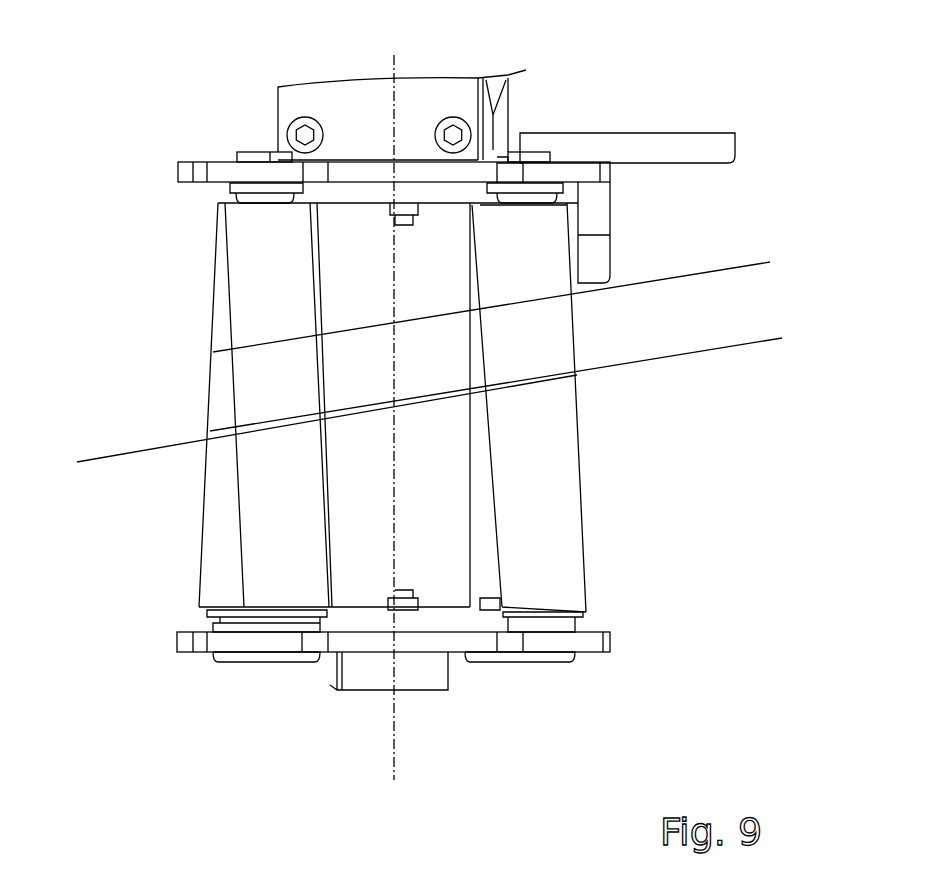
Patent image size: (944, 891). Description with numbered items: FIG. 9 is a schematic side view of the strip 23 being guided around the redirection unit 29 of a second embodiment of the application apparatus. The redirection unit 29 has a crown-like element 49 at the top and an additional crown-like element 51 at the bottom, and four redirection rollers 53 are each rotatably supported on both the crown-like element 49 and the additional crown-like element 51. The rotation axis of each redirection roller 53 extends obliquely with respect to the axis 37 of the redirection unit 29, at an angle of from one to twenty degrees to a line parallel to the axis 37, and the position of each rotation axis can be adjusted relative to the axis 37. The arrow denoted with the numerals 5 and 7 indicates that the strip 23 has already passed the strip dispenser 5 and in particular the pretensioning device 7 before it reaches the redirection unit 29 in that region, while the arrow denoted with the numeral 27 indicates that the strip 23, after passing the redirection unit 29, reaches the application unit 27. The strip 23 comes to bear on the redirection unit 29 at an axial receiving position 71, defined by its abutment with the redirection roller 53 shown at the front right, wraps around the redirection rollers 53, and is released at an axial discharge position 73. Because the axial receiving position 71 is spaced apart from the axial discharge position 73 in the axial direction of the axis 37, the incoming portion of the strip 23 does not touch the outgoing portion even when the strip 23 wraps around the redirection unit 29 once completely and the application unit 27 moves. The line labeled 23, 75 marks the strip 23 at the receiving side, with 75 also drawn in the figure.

The strip dispenser 5 is at (548, 352).
The pretensioning device 7 is at (887, 277).
The strip 23 is at (492, 281).
The application unit 27 is at (38, 537).
The redirection unit 29 is at (707, 112).
The axis 37 is at (394, 763).
The crown-like element 49 is at (589, 172).
The additional crown-like element 51 is at (588, 642).
The redirection roller 53 is at (392, 407).
The axial receiving position 71 is at (533, 338).
The axial discharge position 73 is at (260, 473).
The pivot axis 75 is at (718, 285).